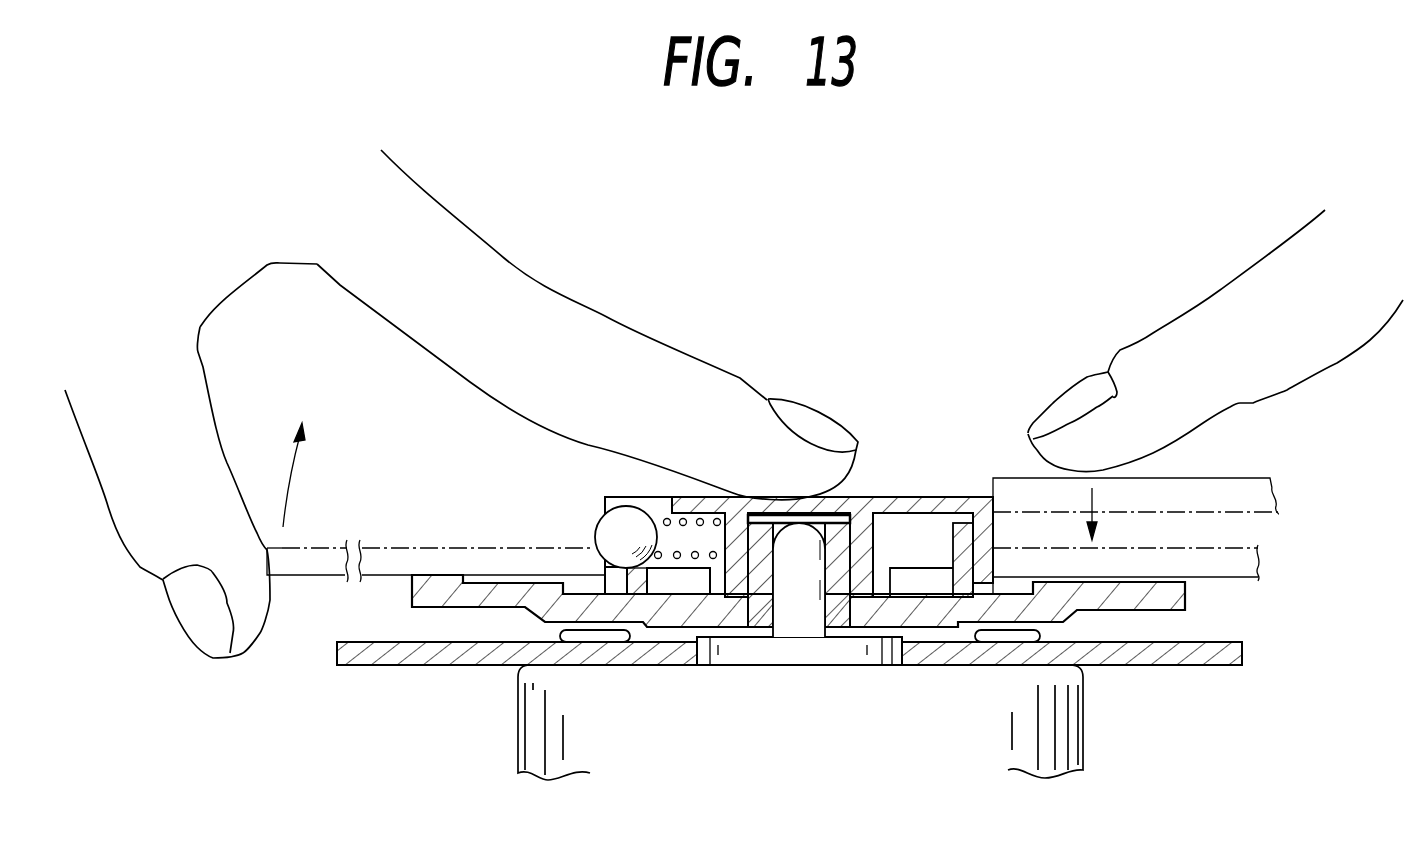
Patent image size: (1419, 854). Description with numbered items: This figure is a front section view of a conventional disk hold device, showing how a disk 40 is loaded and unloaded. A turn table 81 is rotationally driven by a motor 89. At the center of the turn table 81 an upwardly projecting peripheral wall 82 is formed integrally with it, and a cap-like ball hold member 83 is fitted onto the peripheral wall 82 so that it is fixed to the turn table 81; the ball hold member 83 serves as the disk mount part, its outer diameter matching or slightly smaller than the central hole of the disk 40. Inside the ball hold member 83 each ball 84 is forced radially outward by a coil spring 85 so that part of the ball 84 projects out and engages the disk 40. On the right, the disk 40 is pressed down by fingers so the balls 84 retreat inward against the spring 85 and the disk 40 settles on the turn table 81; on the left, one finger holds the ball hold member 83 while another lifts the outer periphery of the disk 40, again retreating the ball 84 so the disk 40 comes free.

The disk 40 is at (440, 557).
The turn table 81 is at (1185, 598).
The peripheral wall 82 is at (968, 510).
The ball hold member 83 is at (920, 500).
The ball 84 is at (598, 528).
The coil spring 85 is at (677, 558).
The motor 89 is at (1068, 727).